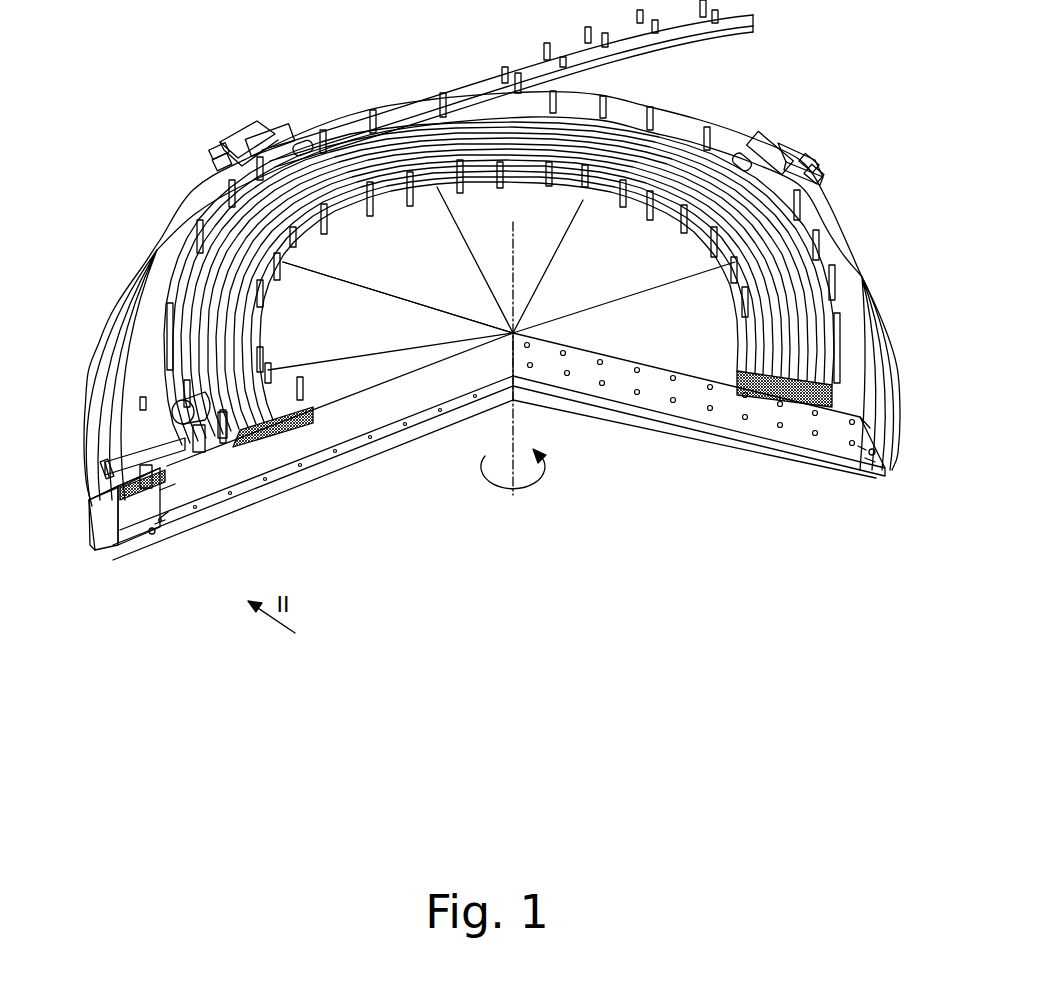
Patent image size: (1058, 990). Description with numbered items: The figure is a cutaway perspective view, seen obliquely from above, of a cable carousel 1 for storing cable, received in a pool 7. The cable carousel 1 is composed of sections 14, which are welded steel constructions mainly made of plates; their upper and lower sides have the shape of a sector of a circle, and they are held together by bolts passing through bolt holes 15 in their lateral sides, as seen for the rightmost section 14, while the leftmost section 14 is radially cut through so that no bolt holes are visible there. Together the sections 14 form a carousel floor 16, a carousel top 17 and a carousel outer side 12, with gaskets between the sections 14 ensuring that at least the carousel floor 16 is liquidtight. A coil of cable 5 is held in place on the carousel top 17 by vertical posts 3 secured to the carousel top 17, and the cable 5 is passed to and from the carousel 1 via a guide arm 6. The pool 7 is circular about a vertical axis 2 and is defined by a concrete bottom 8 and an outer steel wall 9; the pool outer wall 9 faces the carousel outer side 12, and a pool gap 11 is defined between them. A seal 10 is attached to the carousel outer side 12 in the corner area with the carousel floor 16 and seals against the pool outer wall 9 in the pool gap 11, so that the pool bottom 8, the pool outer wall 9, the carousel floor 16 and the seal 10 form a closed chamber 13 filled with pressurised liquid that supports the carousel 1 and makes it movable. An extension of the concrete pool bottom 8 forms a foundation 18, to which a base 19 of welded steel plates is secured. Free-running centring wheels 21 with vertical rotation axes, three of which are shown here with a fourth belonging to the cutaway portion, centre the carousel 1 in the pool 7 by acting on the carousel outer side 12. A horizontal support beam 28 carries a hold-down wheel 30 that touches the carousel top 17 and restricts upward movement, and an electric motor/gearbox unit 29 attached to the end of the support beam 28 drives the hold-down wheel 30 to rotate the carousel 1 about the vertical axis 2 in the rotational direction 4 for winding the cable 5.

The cable carousel 1 is at (108, 106).
The vertical axis 2 is at (515, 235).
The vertical posts 3 is at (165, 320).
The rotational direction 4 is at (522, 475).
The cable 5 is at (215, 275).
The guide arm 6 is at (692, 40).
The pool 7 is at (402, 428).
The concrete bottom 8 is at (374, 448).
The outer steel wall 9 is at (152, 535).
The seal 10 is at (160, 528).
The pool gap 11 is at (165, 520).
The carousel outer side 12 is at (180, 488).
The closed chamber 13 is at (320, 463).
The sections 14 is at (405, 260).
The bolt holes 15 is at (640, 368).
The carousel floor 16 is at (443, 413).
The carousel top 17 is at (302, 309).
The foundation 18 is at (247, 140).
The base 19 is at (245, 150).
The centring wheel 21 is at (225, 163).
The horizontal support beam 28 is at (262, 135).
The electric motor/gearbox unit 29 is at (175, 412).
The hold-down wheel 30 is at (300, 145).